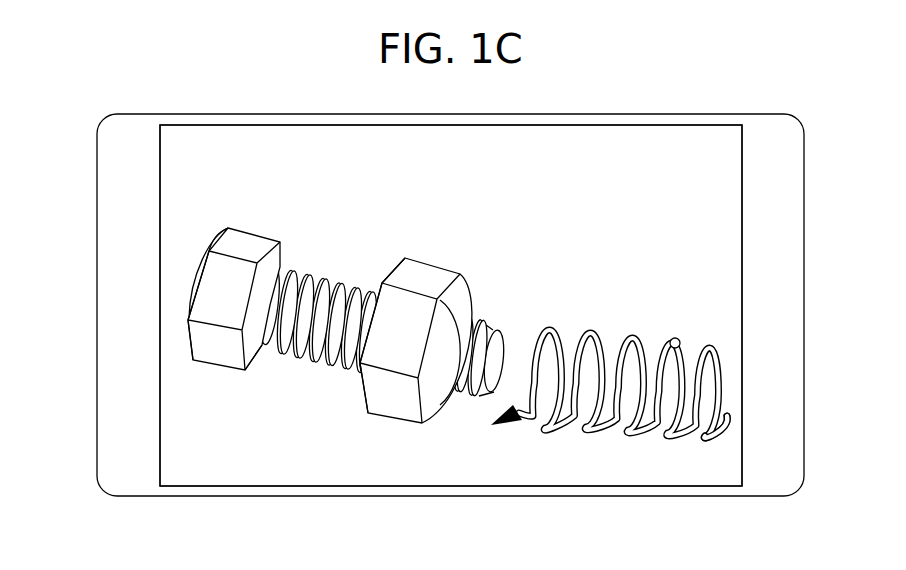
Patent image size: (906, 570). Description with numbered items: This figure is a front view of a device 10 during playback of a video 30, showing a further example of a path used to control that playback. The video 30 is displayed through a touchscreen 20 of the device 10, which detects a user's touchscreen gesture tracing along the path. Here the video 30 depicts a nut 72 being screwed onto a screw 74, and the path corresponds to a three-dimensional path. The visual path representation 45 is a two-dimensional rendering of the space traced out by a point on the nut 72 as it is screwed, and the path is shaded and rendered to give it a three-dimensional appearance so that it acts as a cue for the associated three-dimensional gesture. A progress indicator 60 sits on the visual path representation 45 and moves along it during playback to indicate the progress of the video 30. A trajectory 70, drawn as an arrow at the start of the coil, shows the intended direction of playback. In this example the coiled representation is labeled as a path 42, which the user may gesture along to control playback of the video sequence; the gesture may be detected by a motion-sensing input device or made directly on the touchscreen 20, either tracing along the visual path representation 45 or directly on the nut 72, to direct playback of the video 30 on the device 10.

The device 10 is at (62, 160).
The touchscreen 20 is at (546, 153).
The video 30 is at (267, 157).
The second path 42 is at (703, 417).
The visual path representation 45 is at (673, 437).
The progress indicator 60 is at (680, 342).
The trajectory 70 is at (508, 425).
The nut 72 is at (383, 402).
The screw 74 is at (230, 356).